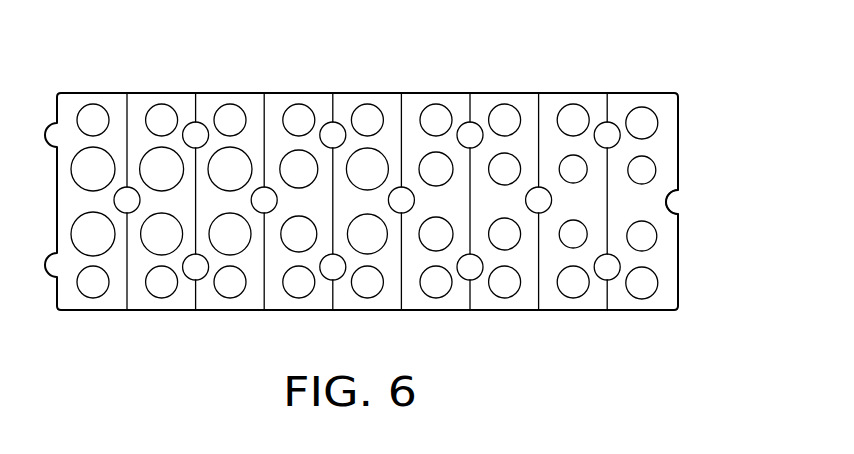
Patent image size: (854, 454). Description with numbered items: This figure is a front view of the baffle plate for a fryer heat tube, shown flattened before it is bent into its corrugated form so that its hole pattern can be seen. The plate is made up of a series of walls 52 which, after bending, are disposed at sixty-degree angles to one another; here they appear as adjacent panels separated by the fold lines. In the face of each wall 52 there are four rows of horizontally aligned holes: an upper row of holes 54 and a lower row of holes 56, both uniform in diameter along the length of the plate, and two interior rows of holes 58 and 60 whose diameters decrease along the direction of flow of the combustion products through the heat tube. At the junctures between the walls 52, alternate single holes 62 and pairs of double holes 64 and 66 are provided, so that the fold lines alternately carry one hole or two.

The wall 52 is at (623, 98).
The upper hole 54 is at (657, 120).
The lower hole 56 is at (660, 290).
The interior hole 58 is at (655, 167).
The interior hole 60 is at (658, 238).
The single hole 62 is at (670, 203).
The double hole 64 is at (605, 126).
The double hole 66 is at (606, 281).